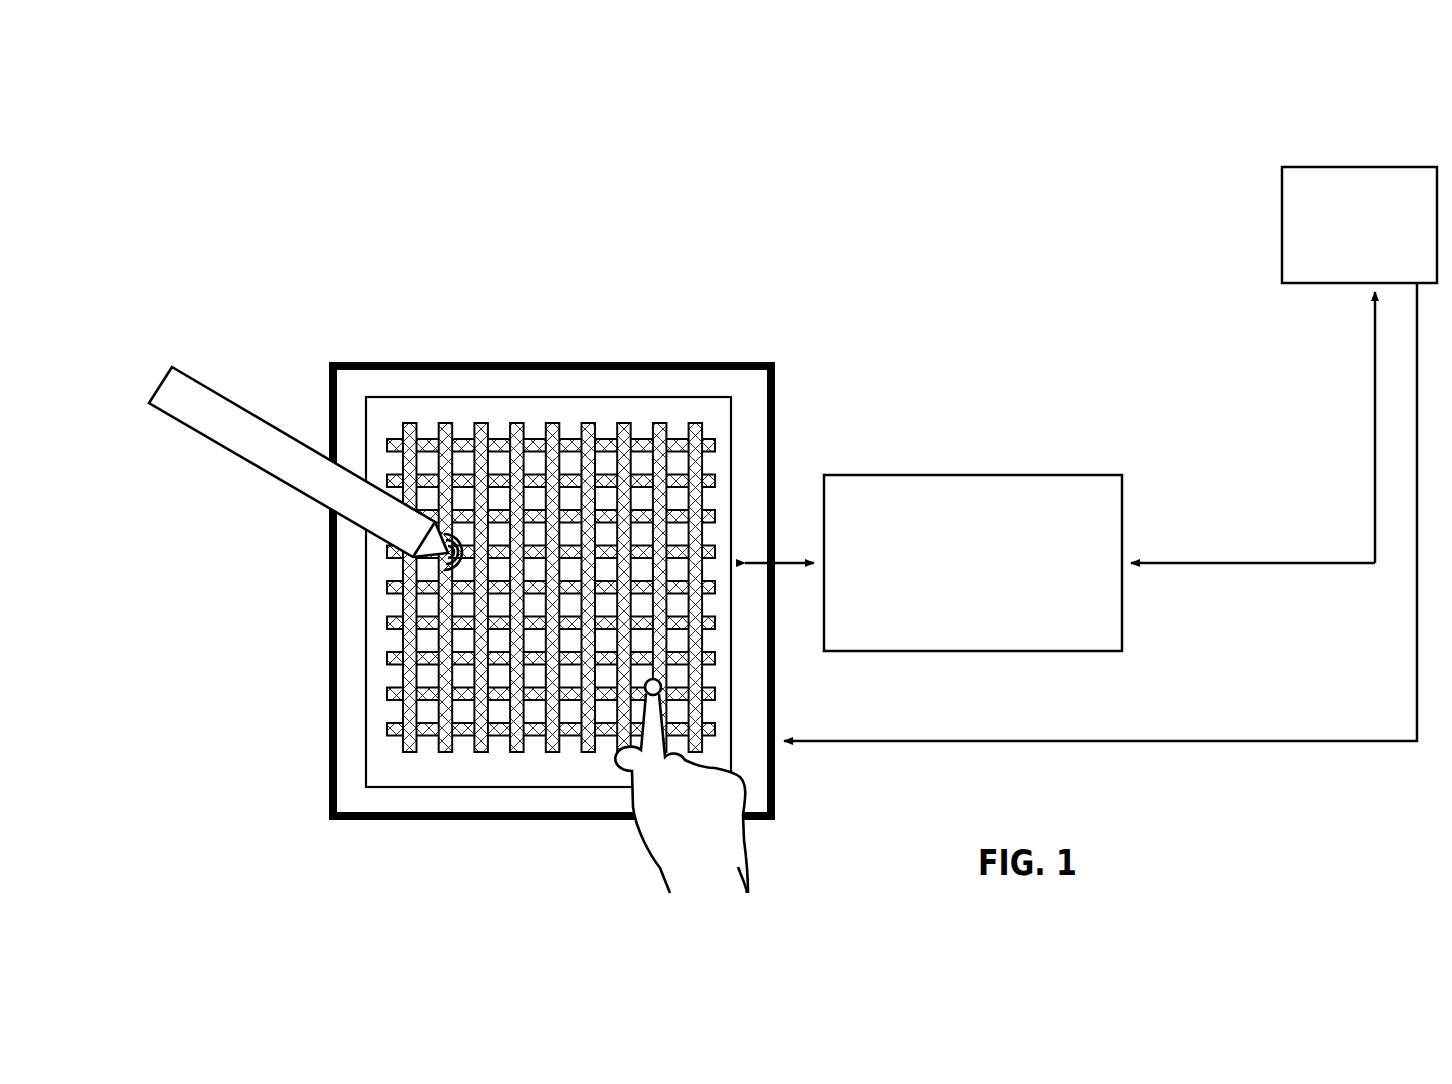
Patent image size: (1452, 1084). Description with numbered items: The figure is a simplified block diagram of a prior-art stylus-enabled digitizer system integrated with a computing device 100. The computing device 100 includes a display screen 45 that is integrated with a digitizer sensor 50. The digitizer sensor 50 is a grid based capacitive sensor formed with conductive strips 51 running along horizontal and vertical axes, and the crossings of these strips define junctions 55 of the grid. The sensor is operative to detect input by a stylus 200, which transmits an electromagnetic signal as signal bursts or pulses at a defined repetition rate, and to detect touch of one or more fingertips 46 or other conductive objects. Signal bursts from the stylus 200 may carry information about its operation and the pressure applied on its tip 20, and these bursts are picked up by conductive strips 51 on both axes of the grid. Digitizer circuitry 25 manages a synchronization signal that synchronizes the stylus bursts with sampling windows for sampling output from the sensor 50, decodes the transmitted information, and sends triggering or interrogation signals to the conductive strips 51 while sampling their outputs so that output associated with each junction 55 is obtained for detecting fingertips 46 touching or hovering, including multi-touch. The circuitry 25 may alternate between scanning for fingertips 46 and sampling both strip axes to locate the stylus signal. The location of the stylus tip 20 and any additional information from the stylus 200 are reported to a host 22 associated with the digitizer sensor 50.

The computing device 100 is at (547, 268).
The stylus 200 is at (297, 440).
The tip 20 is at (433, 542).
The display screen 45 is at (688, 363).
The digitizer sensor 50 is at (733, 450).
The conductive strips 51 is at (618, 425).
The junction 55 is at (515, 692).
The fingertip 46 is at (650, 688).
The digitizer circuitry 25 is at (1053, 475).
The host 22 is at (1333, 167).